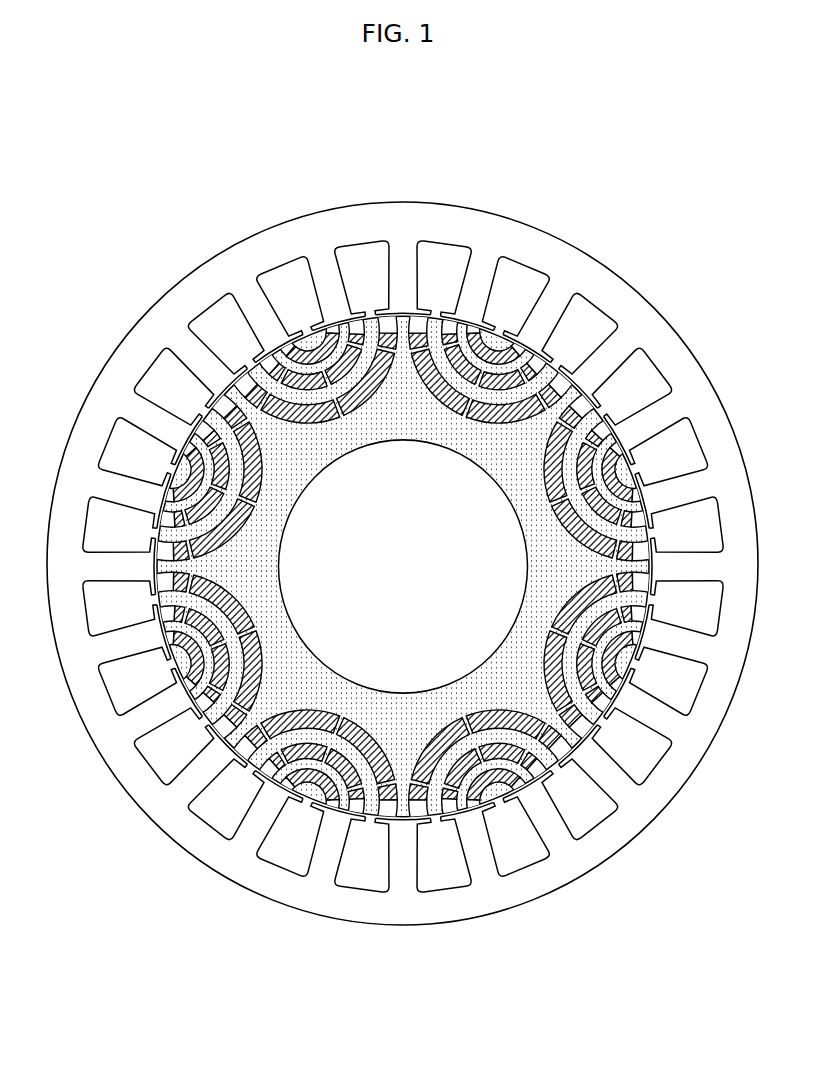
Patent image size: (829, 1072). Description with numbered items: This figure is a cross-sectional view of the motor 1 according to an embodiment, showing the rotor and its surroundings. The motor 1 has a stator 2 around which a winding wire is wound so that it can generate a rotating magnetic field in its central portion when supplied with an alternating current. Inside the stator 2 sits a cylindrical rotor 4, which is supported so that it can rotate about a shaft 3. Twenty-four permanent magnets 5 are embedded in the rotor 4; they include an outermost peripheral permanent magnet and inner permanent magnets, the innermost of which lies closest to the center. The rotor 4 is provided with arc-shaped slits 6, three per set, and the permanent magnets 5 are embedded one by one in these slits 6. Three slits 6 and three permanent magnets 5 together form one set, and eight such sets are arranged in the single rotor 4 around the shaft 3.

The motor 1 is at (600, 151).
The stator 2 is at (640, 322).
The shaft 3 is at (531, 559).
The rotor 4 is at (402, 318).
The permanent magnets 5 is at (310, 339).
The slits 6 is at (284, 344).